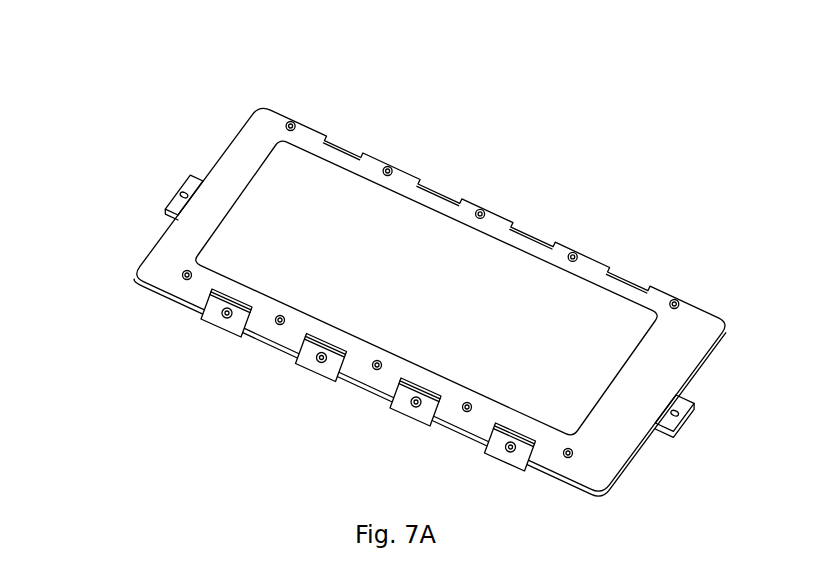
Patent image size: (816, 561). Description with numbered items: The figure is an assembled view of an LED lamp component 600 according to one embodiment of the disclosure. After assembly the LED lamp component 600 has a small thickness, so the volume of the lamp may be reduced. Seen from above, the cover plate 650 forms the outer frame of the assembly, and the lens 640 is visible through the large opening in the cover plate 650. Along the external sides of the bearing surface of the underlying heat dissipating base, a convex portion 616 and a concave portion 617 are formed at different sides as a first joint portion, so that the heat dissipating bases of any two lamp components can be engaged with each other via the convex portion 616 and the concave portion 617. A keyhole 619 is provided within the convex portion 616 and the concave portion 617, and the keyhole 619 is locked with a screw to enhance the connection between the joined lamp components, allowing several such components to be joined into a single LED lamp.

The LED lamp component 600 is at (182, 51).
The cover plate 650 is at (168, 238).
The lens 640 is at (252, 212).
The concave portion 617 is at (350, 148).
The convex portion 616 is at (210, 317).
The keyhole 619 is at (239, 367).